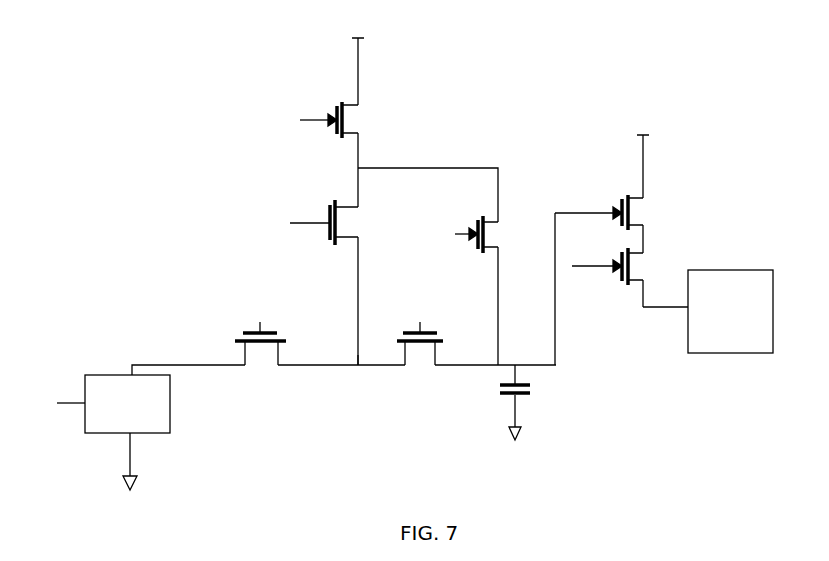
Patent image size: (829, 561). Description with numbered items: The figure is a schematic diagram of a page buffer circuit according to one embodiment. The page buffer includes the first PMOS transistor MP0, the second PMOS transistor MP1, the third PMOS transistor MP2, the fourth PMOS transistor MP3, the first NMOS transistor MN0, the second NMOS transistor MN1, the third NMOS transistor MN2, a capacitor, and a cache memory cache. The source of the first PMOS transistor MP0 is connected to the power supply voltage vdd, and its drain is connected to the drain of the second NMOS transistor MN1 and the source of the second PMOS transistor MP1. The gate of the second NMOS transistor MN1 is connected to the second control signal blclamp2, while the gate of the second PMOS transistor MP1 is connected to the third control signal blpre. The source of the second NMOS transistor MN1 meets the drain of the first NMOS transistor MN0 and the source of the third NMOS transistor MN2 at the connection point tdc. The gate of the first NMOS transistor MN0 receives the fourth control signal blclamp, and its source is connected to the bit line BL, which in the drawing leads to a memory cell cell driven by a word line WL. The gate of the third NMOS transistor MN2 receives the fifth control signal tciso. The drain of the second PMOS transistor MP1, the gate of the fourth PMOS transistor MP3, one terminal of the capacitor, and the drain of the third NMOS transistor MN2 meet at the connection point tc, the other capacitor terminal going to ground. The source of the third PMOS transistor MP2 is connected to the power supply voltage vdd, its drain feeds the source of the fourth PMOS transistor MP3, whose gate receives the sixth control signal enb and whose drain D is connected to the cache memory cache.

The power supply voltage vdd is at (490, 106).
The first PMOS transistor MP0 is at (370, 154).
The second NMOS transistor MN1 is at (363, 282).
The second control signal blclamp2 is at (278, 203).
The second PMOS transistor MP1 is at (507, 290).
The third control signal blpre is at (442, 213).
The third PMOS transistor MP2 is at (623, 280).
The fourth PMOS transistor MP3 is at (652, 276).
The sixth control signal enb is at (589, 255).
The drain of the fourth PMOS transistor D is at (665, 293).
The cache memory cache is at (730, 311).
The memory cell is at (127, 432).
The word line WL is at (62, 391).
The bit line BL is at (188, 352).
The first NMOS transistor MN0 is at (320, 364).
The fourth control signal blclamp is at (264, 316).
The connection point tdc is at (340, 350).
The third NMOS transistor MN2 is at (473, 365).
The fifth control signal tciso is at (413, 313).
The connection point tc is at (518, 391).